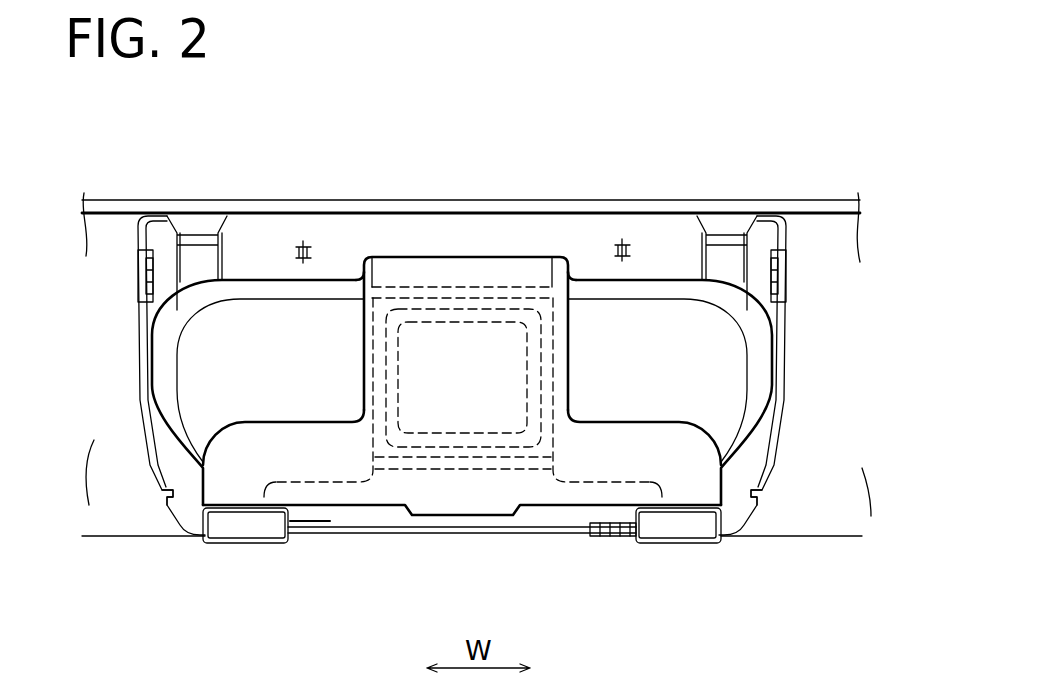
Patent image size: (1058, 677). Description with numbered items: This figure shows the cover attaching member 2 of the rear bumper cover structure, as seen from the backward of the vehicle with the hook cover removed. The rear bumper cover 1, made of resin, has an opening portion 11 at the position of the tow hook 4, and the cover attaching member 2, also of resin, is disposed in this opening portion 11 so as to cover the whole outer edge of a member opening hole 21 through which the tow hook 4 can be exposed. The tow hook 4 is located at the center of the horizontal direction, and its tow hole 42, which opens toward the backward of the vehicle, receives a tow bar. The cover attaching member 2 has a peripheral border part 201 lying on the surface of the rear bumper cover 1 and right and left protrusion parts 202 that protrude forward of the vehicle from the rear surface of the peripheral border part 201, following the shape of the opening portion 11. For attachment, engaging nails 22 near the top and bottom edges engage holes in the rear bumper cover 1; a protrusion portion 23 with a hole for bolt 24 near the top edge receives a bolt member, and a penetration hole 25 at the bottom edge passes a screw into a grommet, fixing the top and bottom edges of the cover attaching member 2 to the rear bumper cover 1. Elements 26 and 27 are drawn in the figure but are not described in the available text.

The rear bumper cover 1 is at (120, 518).
The cover attaching member 2 is at (161, 213).
The peripheral border part 201 is at (257, 226).
The protrusion parts 202 is at (784, 403).
The tow hook 4 is at (462, 283).
The tow hole 42 is at (527, 403).
The opening portion 11 is at (180, 400).
The member opening hole 21 is at (320, 452).
The engaging nail 22 is at (624, 240).
The protrusion portion 23 is at (783, 297).
The hole for bolt 24 is at (783, 270).
The penetration hole 25 is at (618, 538).
The rib 26 is at (734, 233).
The leg portion 27 is at (679, 522).